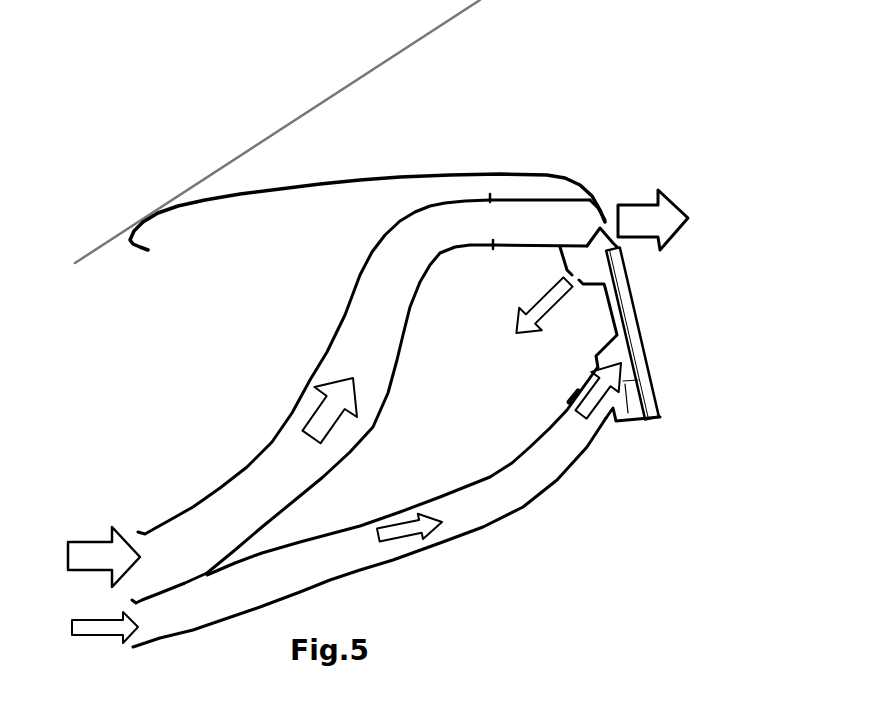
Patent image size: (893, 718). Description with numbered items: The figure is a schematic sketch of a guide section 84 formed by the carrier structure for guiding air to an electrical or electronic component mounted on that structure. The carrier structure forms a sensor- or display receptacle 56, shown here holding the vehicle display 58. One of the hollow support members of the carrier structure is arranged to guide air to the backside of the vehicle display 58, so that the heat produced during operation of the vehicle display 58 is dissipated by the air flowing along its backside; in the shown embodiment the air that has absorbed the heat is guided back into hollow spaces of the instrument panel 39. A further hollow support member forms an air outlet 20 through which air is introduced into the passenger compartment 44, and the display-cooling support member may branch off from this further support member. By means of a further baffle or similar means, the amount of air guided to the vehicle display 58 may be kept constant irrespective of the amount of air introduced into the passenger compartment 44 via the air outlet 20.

The instrument panel 39 is at (645, 80).
The air outlet 20 is at (605, 220).
The vehicle display 58 is at (640, 333).
The sensor- or display receptacle 56 is at (637, 420).
The guide section 84 is at (643, 507).
The passenger compartment 44 is at (791, 298).